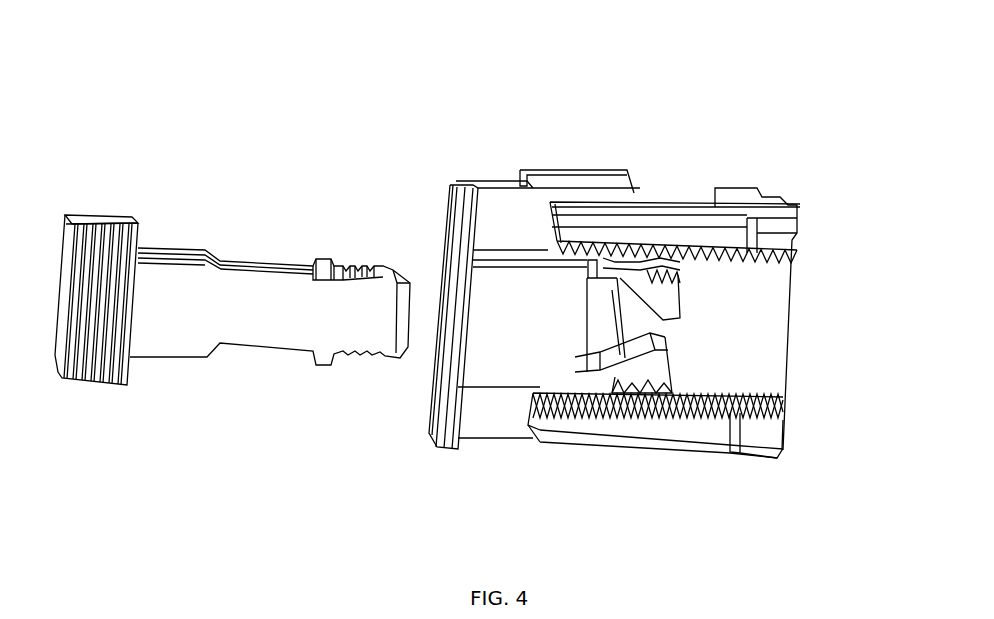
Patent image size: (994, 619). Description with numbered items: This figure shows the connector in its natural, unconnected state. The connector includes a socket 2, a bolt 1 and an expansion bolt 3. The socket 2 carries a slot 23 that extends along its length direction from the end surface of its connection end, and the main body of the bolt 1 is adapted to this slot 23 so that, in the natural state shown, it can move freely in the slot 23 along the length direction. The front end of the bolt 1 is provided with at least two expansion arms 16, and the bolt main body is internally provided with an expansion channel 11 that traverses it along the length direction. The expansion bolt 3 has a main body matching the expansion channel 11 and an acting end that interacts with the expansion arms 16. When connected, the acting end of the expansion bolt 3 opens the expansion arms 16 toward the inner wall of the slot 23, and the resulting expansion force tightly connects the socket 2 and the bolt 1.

The bolt 1 is at (530, 282).
The socket 2 is at (777, 230).
The expansion bolt 3 is at (275, 306).
The expansion channel 11 is at (598, 332).
The expansion arm 16 is at (627, 273).
The slot 23 is at (733, 317).